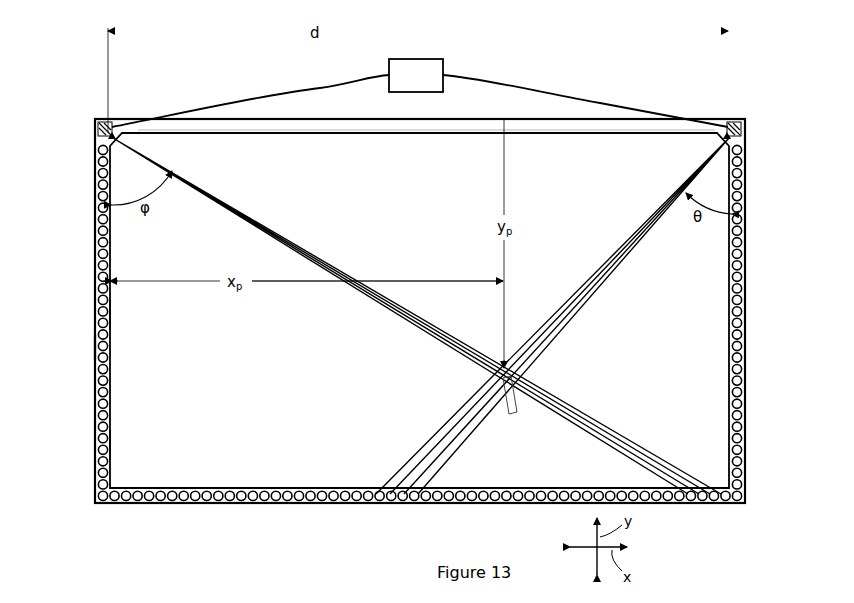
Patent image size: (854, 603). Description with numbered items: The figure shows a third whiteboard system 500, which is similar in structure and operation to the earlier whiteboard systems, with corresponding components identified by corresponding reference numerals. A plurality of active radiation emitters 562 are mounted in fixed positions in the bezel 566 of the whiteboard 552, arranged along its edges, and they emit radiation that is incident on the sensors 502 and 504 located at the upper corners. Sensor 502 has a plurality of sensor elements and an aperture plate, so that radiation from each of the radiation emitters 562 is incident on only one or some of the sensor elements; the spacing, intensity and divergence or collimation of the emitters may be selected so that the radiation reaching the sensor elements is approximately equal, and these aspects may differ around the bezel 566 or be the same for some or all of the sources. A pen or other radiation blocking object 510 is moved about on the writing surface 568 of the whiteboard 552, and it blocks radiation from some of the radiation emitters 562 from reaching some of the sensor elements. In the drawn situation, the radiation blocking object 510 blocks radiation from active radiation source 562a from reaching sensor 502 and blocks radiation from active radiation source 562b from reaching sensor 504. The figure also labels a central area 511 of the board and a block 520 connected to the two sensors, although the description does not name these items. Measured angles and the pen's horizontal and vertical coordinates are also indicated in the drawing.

The whiteboard system 500 is at (243, 519).
The sensor 502 is at (742, 130).
The sensor 504 is at (100, 130).
The pen 510 is at (514, 414).
The input surface 511 is at (419, 309).
The processing structure 520 is at (420, 93).
The whiteboard 552 is at (183, 311).
The active radiation emitters 562 is at (97, 242).
The active radiation source 562a is at (393, 496).
The active radiation source 562b is at (707, 498).
The bezel 566 is at (100, 346).
The writing surface 568 is at (183, 440).